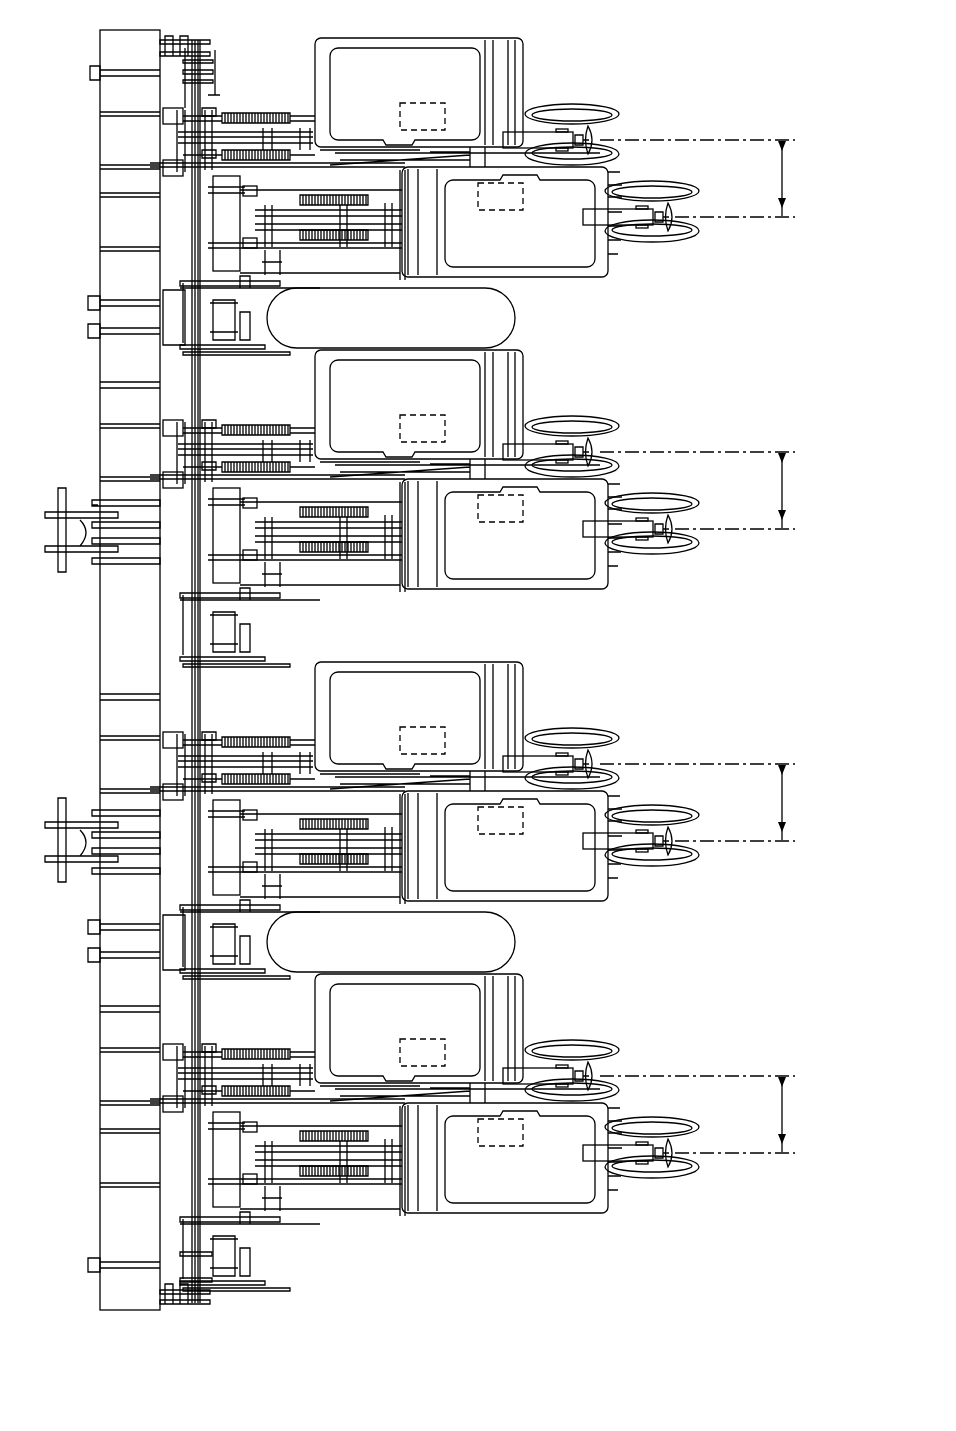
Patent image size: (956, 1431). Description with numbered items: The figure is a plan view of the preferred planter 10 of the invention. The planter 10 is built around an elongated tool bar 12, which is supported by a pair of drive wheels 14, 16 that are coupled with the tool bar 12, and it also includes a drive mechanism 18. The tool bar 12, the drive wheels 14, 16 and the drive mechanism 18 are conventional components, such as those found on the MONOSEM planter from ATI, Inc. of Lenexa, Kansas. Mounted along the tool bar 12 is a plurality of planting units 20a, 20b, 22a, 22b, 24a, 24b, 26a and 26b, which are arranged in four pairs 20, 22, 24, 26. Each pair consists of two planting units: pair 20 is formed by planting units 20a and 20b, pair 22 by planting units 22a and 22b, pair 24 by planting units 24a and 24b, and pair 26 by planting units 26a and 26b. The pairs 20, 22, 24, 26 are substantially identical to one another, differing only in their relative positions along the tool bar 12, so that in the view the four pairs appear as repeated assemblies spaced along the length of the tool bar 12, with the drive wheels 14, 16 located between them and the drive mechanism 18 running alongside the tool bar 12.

The planter 10 is at (572, 1240).
The tool bar 12 is at (125, 1018).
The drive wheel 14 is at (495, 948).
The drive wheel 16 is at (498, 318).
The drive mechanism 18 is at (222, 50).
The pair of planting units 20 is at (472, 1126).
The planting unit 20a is at (487, 1184).
The planting unit 20b is at (472, 1037).
The pair of planting units 22 is at (472, 814).
The planting unit 22a is at (487, 872).
The planting unit 22b is at (472, 725).
The pair of planting units 24 is at (472, 502).
The planting unit 24a is at (487, 560).
The planting unit 24b is at (472, 413).
The pair of planting units 26 is at (472, 190).
The planting unit 26a is at (625, 176).
The planting unit 26b is at (532, 50).